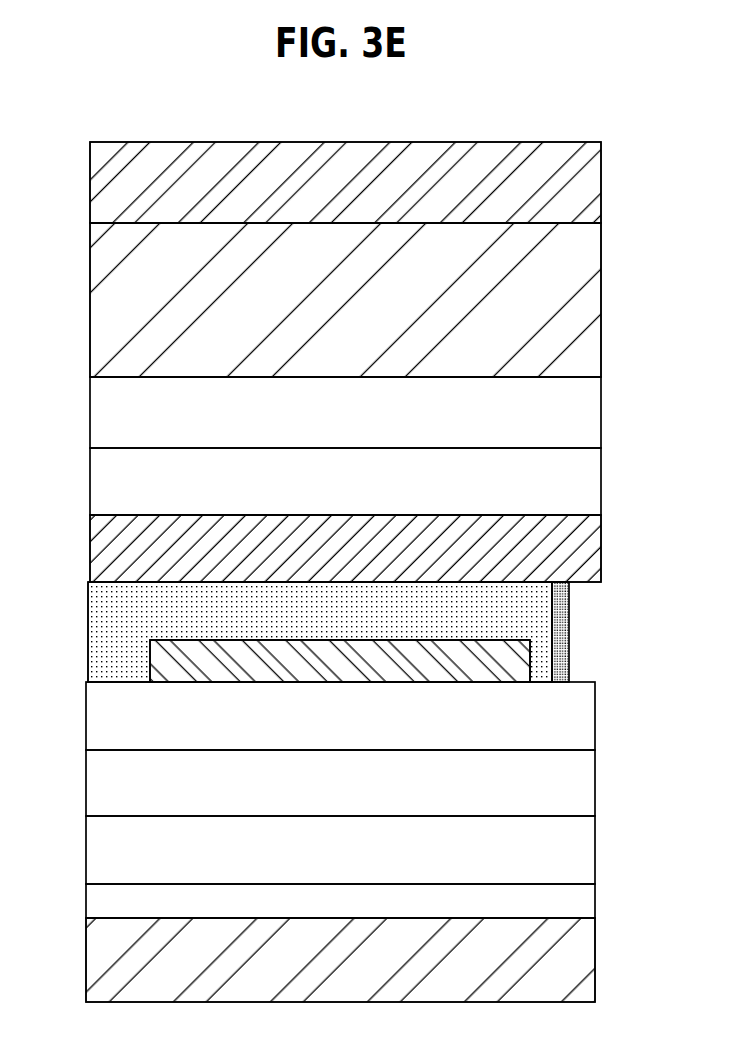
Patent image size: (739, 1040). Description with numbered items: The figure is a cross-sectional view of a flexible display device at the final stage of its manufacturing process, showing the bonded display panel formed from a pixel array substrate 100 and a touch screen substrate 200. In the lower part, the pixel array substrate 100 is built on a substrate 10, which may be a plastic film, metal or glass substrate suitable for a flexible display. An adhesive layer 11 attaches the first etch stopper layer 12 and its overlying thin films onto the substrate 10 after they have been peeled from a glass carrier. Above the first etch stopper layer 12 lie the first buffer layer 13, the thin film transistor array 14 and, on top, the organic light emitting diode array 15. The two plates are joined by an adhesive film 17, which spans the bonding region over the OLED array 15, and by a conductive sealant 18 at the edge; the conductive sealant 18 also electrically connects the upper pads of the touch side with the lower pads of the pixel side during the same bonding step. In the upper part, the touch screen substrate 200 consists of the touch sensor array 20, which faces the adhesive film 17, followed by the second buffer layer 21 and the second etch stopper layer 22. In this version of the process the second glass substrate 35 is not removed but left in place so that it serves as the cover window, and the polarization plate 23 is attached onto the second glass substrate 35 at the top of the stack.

The touch screen substrate 200 is at (68, 142).
The polarization plate 23 is at (593, 182).
The second glass substrate 35 is at (593, 295).
The second etch stopper layer 22 is at (592, 415).
The second buffer layer 21 is at (592, 477).
The touch sensor array 20 is at (592, 543).
The adhesive film 17 is at (517, 603).
The conductive sealant 18 is at (560, 630).
The organic light emitting diode array 15 is at (518, 665).
The pixel array substrate 100 is at (66, 642).
The thin film transistor array 14 is at (585, 720).
The first buffer layer 13 is at (585, 784).
The first etch stopper layer 12 is at (585, 847).
The adhesive layer 11 is at (585, 898).
The substrate 10 is at (585, 958).